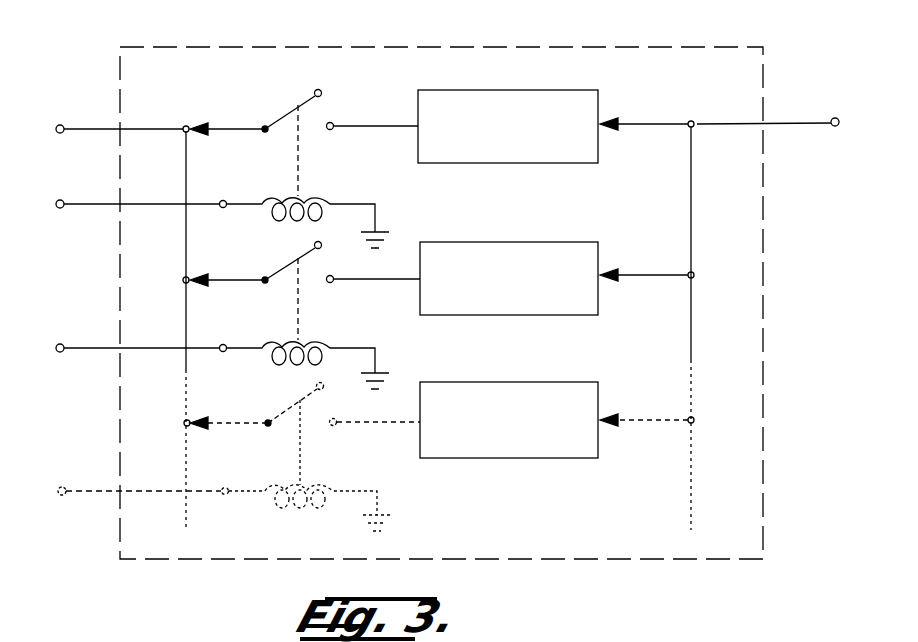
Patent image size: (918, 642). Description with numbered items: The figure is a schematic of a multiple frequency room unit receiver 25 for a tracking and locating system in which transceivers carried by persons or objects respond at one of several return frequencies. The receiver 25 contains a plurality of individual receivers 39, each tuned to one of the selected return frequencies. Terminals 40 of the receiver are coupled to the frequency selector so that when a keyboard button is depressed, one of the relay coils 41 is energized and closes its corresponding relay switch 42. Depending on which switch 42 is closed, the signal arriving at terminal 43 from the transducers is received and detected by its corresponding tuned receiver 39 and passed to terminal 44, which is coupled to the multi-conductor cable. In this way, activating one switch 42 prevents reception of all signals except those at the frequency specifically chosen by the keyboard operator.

The receiver 25 is at (537, 47).
The individual receivers 39 is at (493, 163).
The terminals 40 is at (60, 208).
The relay coils 41 is at (317, 195).
The relay switch 42 is at (290, 112).
The terminal 43 is at (832, 118).
The terminal 44 is at (61, 125).